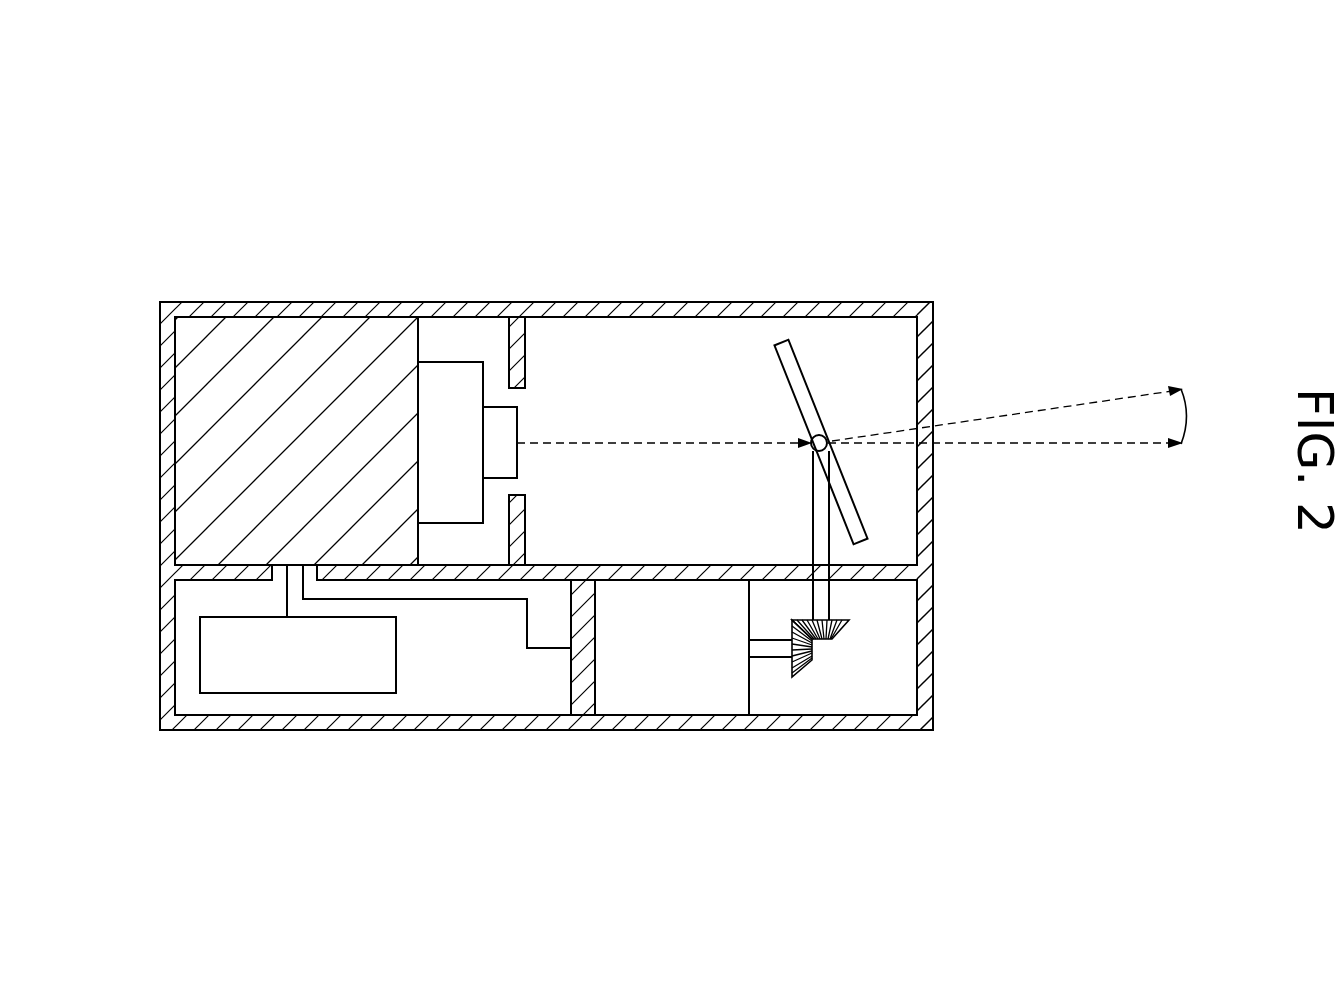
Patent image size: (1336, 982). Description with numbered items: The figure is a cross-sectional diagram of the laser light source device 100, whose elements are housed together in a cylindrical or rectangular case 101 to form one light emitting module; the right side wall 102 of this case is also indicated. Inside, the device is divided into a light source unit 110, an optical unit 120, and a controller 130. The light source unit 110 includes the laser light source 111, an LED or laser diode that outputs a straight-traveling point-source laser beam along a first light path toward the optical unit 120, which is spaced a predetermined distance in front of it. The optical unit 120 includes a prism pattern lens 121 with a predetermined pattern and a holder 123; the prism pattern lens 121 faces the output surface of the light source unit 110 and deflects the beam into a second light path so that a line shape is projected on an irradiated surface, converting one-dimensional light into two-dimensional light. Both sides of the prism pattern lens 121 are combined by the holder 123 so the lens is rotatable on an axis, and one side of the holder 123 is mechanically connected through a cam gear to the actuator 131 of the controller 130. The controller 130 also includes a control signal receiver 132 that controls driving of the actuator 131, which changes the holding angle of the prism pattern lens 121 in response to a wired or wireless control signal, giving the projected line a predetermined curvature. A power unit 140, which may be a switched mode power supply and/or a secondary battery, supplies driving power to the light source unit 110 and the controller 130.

The laser light source device 100 is at (430, 196).
The case 101 is at (855, 304).
The side wall of housing 102 is at (930, 345).
The light source unit 110 is at (163, 275).
The laser light source 111 is at (511, 422).
The optical unit 120 is at (925, 277).
The prism pattern lens 121 is at (848, 508).
The holder 123 is at (820, 604).
The controller 130 is at (139, 590).
The actuator 131 is at (673, 688).
The control signal receiver 132 is at (302, 670).
The power unit 140 is at (203, 424).